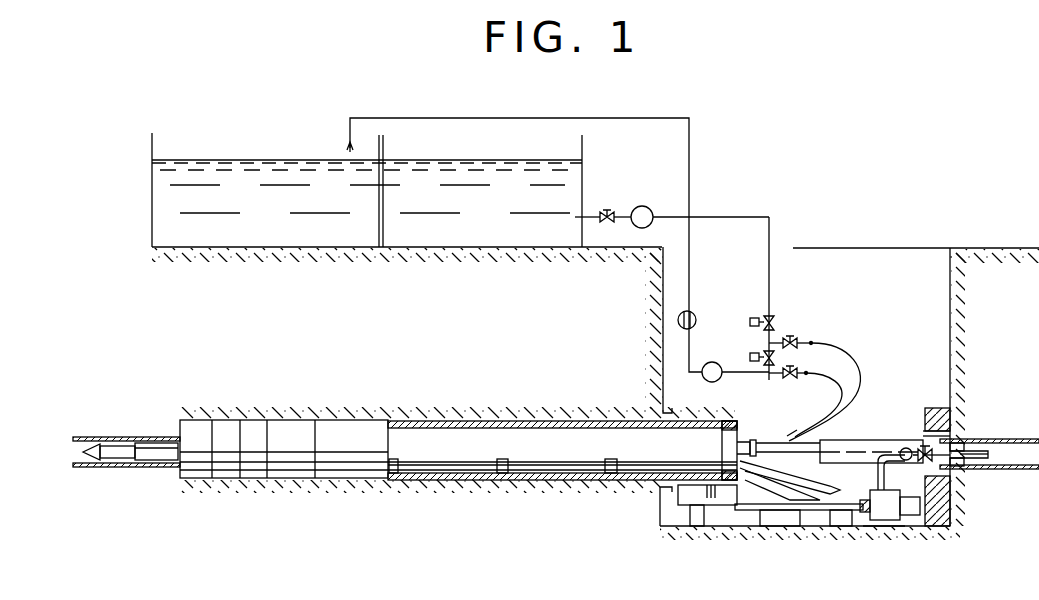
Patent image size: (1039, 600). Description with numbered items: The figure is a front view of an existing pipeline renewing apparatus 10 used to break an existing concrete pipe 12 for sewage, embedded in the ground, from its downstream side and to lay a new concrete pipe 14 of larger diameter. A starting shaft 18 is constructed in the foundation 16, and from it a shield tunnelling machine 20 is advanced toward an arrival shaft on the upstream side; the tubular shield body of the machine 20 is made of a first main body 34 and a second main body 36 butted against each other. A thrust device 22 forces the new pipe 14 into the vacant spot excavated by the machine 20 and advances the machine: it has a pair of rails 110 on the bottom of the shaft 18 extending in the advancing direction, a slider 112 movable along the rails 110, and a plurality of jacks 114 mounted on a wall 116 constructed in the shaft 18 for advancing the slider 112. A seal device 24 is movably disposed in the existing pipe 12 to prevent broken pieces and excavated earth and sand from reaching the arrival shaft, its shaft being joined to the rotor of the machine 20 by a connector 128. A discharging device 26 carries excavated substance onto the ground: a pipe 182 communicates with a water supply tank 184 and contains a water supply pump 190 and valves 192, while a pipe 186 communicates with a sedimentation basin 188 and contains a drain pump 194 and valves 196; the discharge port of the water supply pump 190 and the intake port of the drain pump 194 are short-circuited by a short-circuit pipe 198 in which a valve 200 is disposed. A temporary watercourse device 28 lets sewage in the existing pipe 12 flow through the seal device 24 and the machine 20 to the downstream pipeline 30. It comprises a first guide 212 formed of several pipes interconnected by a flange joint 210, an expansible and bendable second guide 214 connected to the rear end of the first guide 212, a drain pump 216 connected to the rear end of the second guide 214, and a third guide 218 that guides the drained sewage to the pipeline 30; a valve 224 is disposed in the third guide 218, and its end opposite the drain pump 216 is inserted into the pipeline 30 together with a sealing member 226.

The existing pipeline renewing apparatus 10 is at (794, 182).
The existing concrete pipe 12 is at (140, 437).
The new concrete pipe 14 is at (506, 423).
The foundation 16 is at (278, 258).
The starting shaft 18 is at (660, 292).
The shield tunnelling machine 20 is at (292, 420).
The thrust device 22 is at (893, 440).
The seal device 24 is at (112, 460).
The discharging device 26 is at (773, 237).
The temporary watercourse device 28 is at (752, 505).
The pipeline 30 is at (1005, 439).
The first main body 34 is at (215, 430).
The second main body 36 is at (352, 430).
The rails 110 is at (690, 487).
The slider 112 is at (732, 419).
The jacks 114 is at (858, 440).
The wall 116 is at (948, 425).
The connector 128 is at (155, 462).
The pipe 182 is at (733, 217).
The water supply tank 184 is at (583, 143).
The pipe 186 is at (690, 140).
The sedimentation basin 188 is at (152, 146).
The water supply pump 190 is at (643, 206).
The valves 192 is at (607, 210).
The drain pump 194 is at (715, 362).
The valves 196 is at (692, 312).
The short-circuit pipe 198 is at (766, 332).
The valve 200 is at (766, 366).
The flange joint 210 is at (500, 474).
The first guide 212 is at (398, 471).
The second guide 214 is at (800, 506).
The drain pump 216 is at (880, 520).
The third guide 218 is at (873, 470).
The valve 224 is at (945, 492).
The sealing member 226 is at (960, 459).